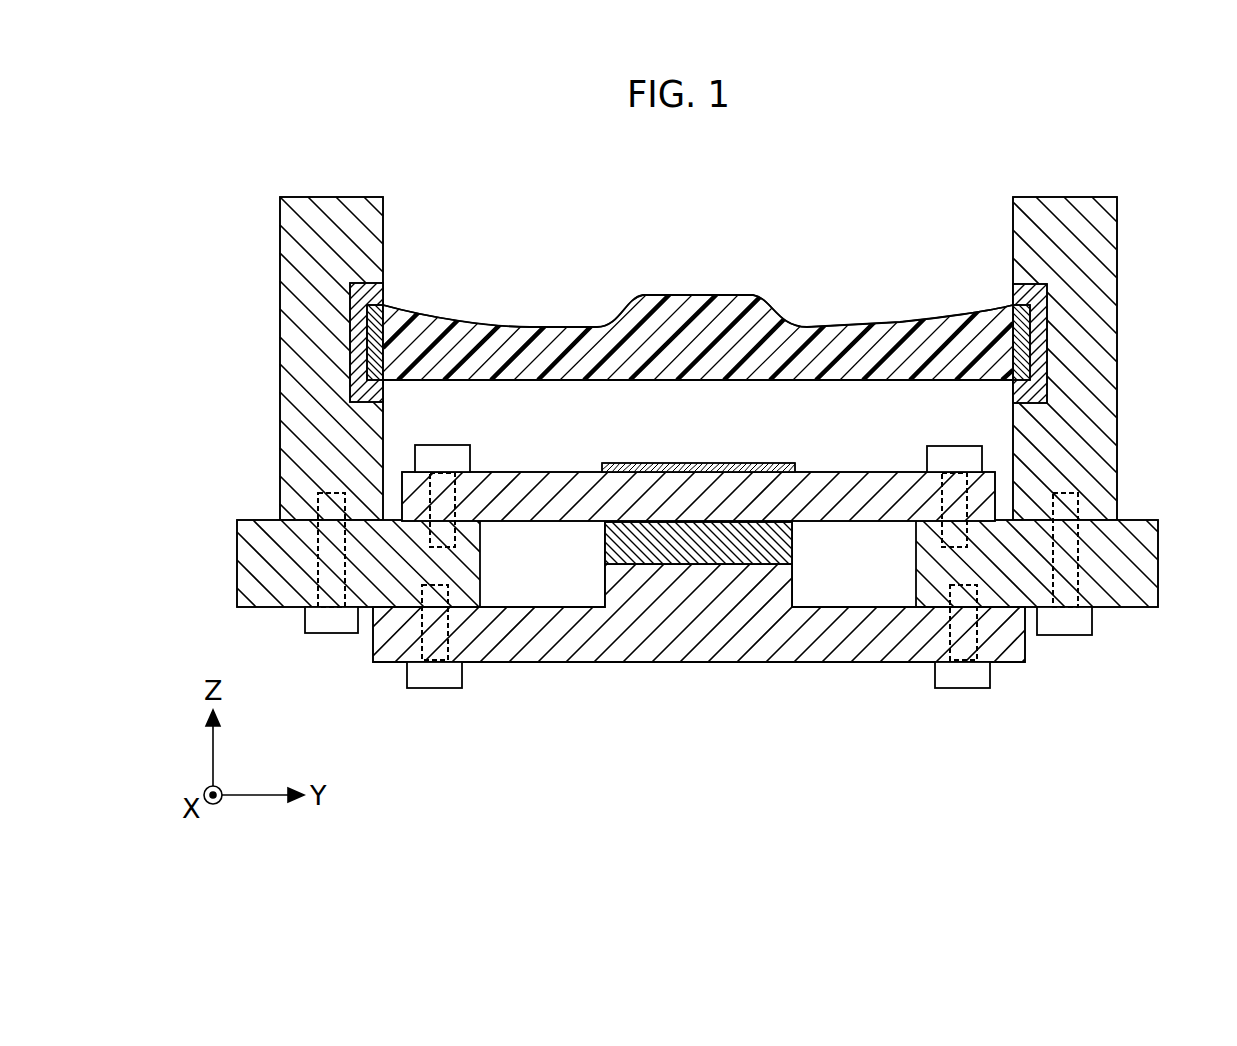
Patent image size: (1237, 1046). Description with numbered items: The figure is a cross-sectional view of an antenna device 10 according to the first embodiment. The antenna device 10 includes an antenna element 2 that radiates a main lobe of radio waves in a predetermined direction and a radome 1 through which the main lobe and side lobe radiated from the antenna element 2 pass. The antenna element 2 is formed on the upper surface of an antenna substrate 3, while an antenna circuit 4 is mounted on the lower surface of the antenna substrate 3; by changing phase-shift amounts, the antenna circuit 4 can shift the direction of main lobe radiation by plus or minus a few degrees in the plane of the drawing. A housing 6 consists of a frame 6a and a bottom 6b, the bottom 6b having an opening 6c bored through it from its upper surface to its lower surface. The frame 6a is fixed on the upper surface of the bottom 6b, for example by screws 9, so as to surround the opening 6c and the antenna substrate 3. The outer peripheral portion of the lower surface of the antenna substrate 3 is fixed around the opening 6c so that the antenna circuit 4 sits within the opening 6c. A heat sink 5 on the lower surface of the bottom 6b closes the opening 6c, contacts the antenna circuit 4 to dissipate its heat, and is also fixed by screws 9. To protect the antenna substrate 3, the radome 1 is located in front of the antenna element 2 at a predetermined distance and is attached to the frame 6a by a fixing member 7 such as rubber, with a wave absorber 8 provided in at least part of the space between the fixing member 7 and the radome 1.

The antenna device 10 is at (268, 125).
The radome 1 is at (698, 304).
The antenna element 2 is at (632, 464).
The antenna substrate 3 is at (518, 481).
The antenna circuit 4 is at (780, 545).
The heat sink 5 is at (887, 652).
The housing 6 is at (1215, 489).
The frame 6a is at (297, 483).
The bottom 6b is at (267, 538).
The opening 6c is at (518, 577).
The fixing member 7 is at (373, 290).
The wave absorber 8 is at (378, 320).
The screws 9 is at (449, 452).